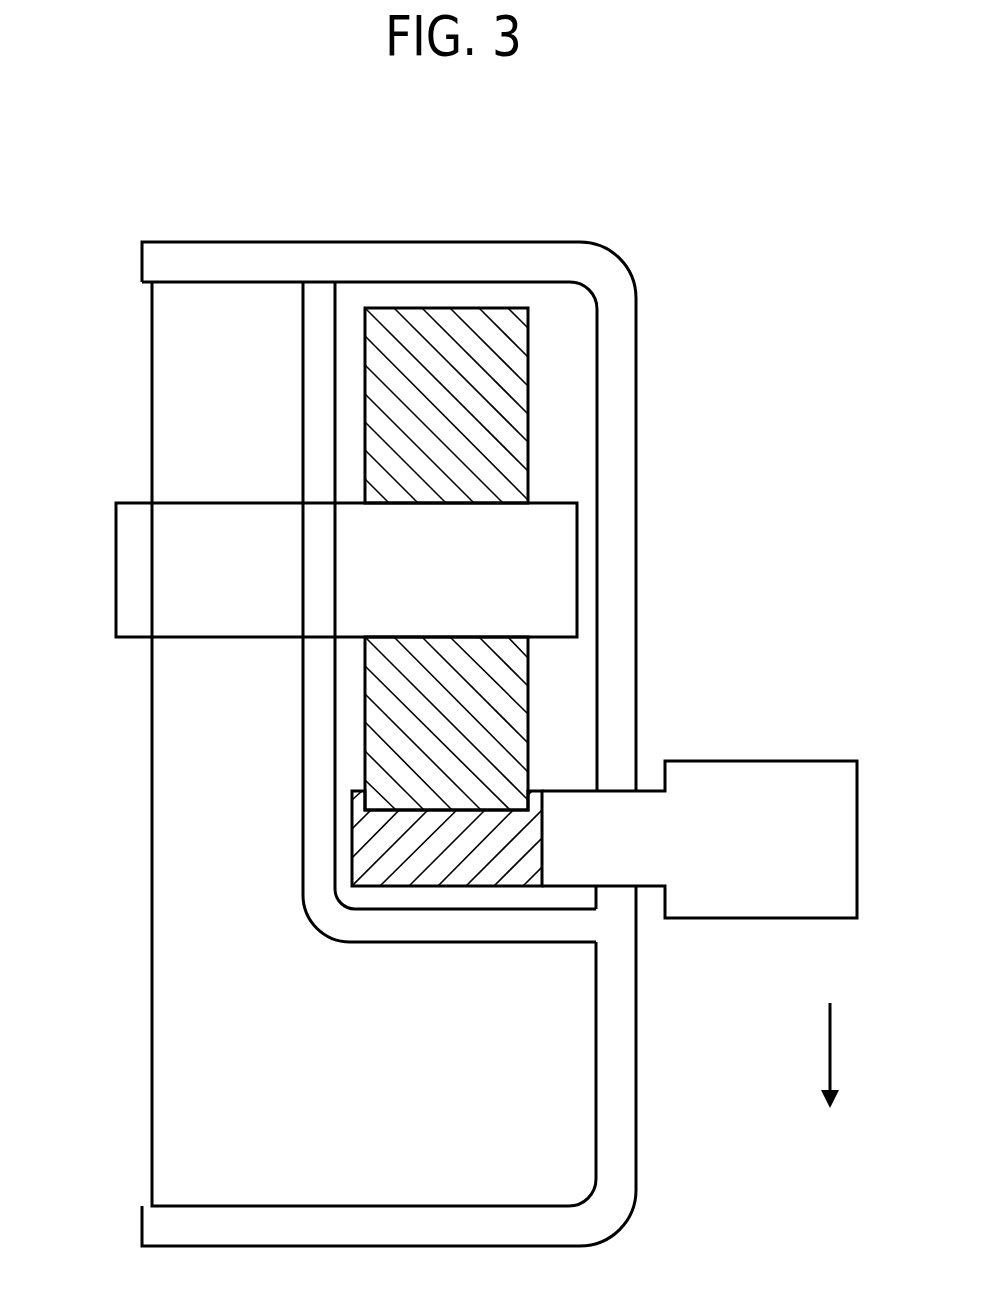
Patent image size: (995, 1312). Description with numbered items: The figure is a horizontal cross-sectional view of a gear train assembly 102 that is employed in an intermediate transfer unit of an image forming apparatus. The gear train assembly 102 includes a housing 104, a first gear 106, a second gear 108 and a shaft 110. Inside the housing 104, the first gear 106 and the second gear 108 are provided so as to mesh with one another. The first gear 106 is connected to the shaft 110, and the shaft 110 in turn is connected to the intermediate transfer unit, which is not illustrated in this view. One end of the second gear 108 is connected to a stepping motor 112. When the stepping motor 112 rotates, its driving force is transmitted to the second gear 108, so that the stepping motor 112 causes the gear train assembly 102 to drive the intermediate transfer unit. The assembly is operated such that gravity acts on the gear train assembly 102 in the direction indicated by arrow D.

The gear train assembly 102 is at (772, 288).
The housing 104 is at (556, 252).
The first gear 106 is at (439, 318).
The second gear 108 is at (363, 845).
The shaft 110 is at (127, 545).
The stepping motor 112 is at (752, 773).